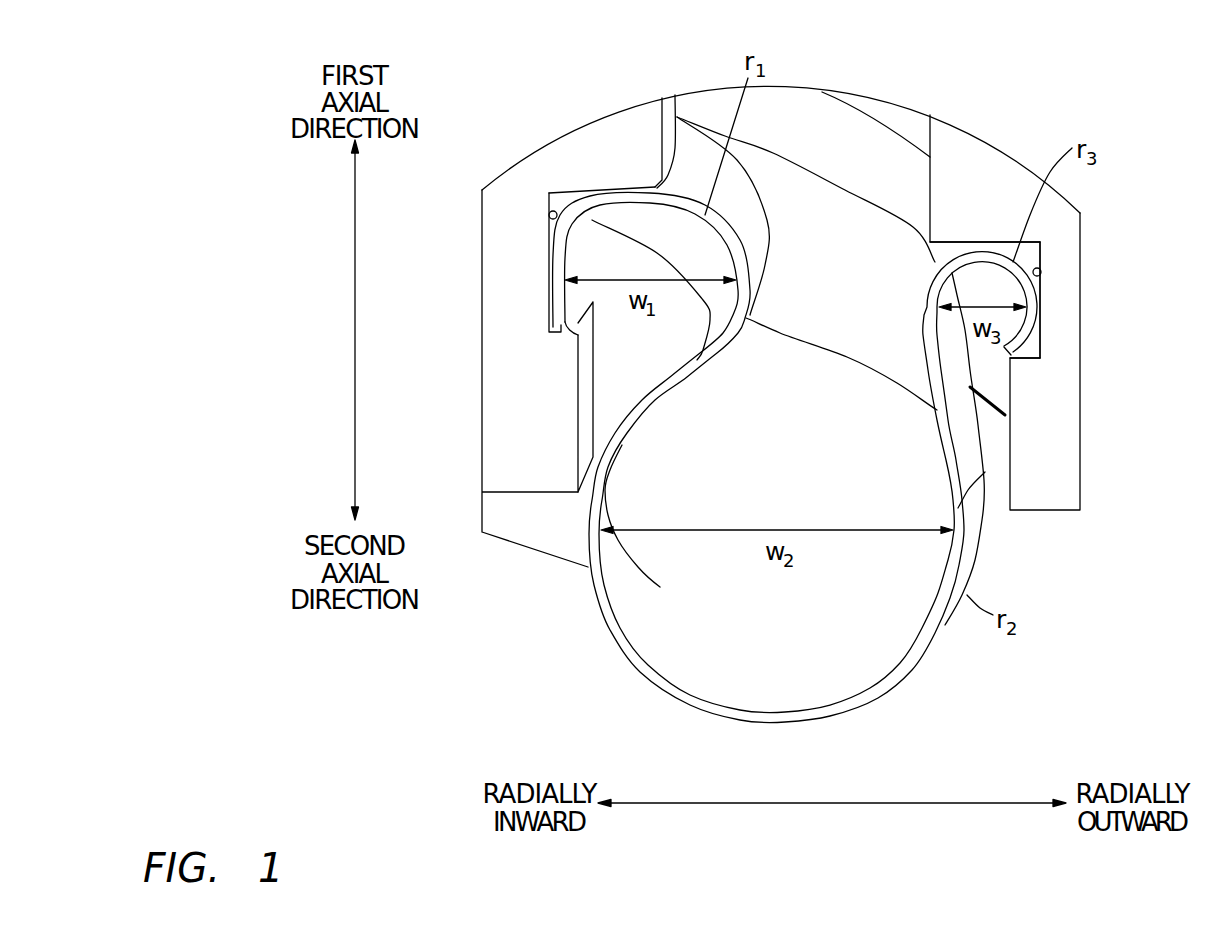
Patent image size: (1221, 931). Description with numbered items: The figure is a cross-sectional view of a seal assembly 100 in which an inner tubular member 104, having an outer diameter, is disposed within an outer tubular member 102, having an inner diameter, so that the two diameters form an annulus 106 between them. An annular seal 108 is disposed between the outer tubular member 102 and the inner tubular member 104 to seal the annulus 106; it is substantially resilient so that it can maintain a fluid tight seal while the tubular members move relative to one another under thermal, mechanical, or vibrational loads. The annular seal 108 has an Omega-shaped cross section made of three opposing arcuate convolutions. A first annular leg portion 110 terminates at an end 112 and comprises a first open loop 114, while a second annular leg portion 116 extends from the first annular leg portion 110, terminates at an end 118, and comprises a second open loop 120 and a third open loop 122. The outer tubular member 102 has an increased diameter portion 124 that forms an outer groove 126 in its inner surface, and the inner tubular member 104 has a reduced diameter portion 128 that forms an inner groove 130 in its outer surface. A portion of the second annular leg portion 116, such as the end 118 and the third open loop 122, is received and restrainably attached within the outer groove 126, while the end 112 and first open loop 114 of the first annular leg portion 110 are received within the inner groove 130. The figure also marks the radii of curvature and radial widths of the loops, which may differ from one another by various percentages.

The seal assembly 100 is at (1078, 84).
The outer tubular member 102 is at (1083, 430).
The inner tubular member 104 is at (481, 392).
The annulus 106 is at (995, 496).
The annular seal 108 is at (944, 663).
The first annular leg portion 110 is at (606, 190).
The end 112 is at (548, 335).
The first open loop 114 is at (682, 200).
The second annular leg portion 116 is at (822, 714).
The end 118 is at (1018, 360).
The second open loop 120 is at (948, 622).
The third open loop 122 is at (1030, 267).
The increased diameter portion 124 is at (1042, 278).
The outer groove 126 is at (1043, 353).
The reduced diameter portion 128 is at (552, 214).
The inner groove 130 is at (552, 193).